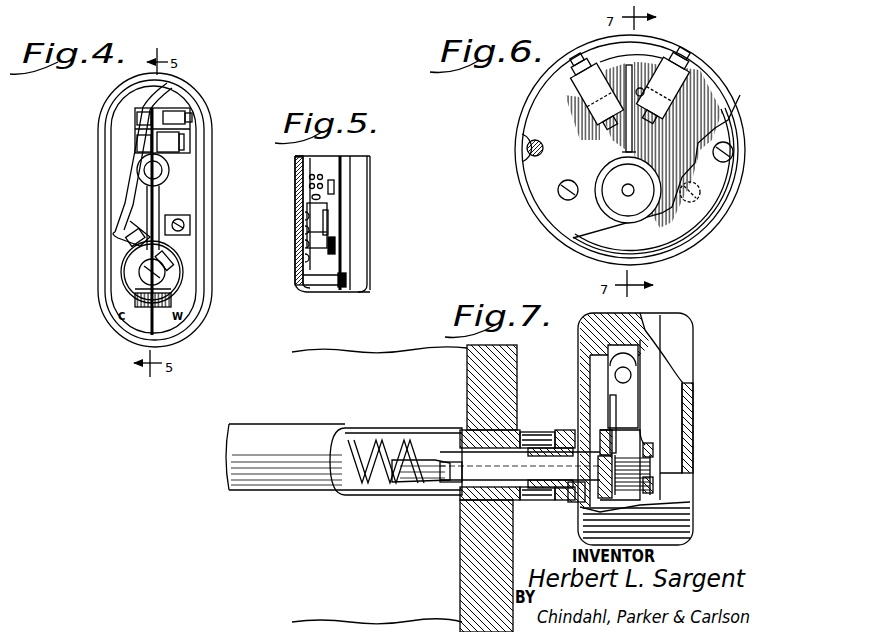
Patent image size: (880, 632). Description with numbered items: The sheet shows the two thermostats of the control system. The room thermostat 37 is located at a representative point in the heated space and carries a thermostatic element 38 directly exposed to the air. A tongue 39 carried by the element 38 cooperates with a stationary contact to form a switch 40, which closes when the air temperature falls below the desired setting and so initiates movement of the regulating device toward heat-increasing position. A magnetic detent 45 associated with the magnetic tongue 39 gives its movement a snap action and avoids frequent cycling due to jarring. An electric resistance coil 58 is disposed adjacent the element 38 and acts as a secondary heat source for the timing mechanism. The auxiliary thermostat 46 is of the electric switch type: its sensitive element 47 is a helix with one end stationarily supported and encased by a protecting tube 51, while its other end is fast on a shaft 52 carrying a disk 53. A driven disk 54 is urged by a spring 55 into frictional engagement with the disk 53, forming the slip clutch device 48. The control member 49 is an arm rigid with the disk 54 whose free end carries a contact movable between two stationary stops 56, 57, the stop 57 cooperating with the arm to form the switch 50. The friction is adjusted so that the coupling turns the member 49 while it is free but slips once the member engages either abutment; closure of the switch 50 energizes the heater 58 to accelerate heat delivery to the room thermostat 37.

In FIG. 4, the thermostat 37 is at (214, 100).
In FIG. 4, the thermostatic element 38 is at (182, 270).
In FIG. 5, the thermostatic element 38 is at (312, 226).
In FIG. 4, the tongue 39 is at (160, 165).
In FIG. 5, the tongue 39 is at (310, 165).
In FIG. 4, the switch 40 is at (154, 112).
In FIG. 4, the magnetic detent 45 is at (170, 130).
In FIG. 6, the thermostat 46 is at (713, 62).
In FIG. 7, the thermostat 46 is at (412, 512).
In FIG. 7, the sensitive element 47 is at (383, 445).
In FIG. 7, the device 48 is at (606, 428).
In FIG. 6, the control member 49 is at (626, 136).
In FIG. 7, the control member 49 is at (628, 390).
In FIG. 6, the switch 50 is at (642, 92).
In FIG. 7, the protecting tube 51 is at (270, 480).
In FIG. 6, the shaft 52 is at (627, 196).
In FIG. 7, the shaft 52 is at (592, 468).
In FIG. 7, the disk 53 is at (608, 440).
In FIG. 6, the driven disk 54 is at (648, 200).
In FIG. 7, the driven disk 54 is at (620, 442).
In FIG. 7, the spring 55 is at (632, 488).
In FIG. 6, the stationary stop 56 is at (622, 90).
In FIG. 6, the stationary stop 57 is at (647, 95).
In FIG. 7, the stationary stop 57 is at (630, 356).
In FIG. 4, the electric resistance coil 58 is at (172, 300).
In FIG. 5, the electric resistance coil 58 is at (330, 253).